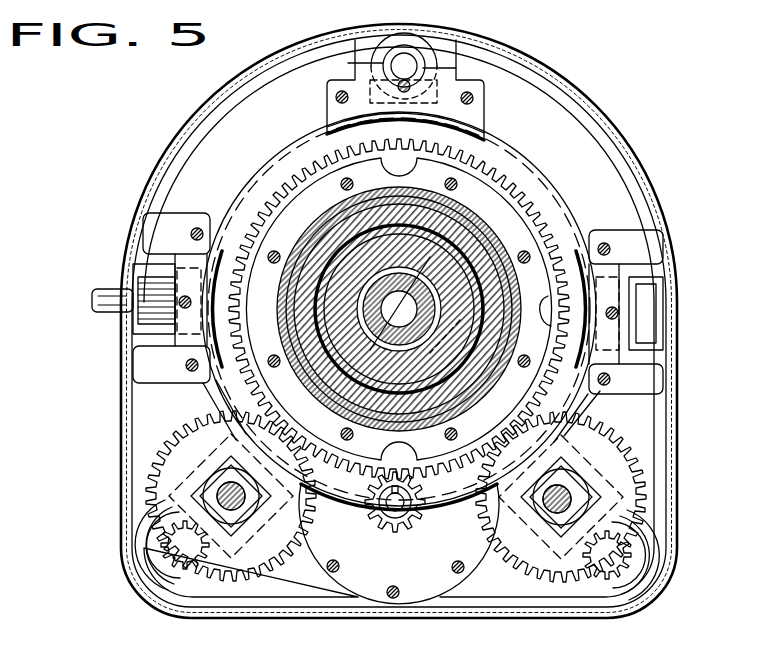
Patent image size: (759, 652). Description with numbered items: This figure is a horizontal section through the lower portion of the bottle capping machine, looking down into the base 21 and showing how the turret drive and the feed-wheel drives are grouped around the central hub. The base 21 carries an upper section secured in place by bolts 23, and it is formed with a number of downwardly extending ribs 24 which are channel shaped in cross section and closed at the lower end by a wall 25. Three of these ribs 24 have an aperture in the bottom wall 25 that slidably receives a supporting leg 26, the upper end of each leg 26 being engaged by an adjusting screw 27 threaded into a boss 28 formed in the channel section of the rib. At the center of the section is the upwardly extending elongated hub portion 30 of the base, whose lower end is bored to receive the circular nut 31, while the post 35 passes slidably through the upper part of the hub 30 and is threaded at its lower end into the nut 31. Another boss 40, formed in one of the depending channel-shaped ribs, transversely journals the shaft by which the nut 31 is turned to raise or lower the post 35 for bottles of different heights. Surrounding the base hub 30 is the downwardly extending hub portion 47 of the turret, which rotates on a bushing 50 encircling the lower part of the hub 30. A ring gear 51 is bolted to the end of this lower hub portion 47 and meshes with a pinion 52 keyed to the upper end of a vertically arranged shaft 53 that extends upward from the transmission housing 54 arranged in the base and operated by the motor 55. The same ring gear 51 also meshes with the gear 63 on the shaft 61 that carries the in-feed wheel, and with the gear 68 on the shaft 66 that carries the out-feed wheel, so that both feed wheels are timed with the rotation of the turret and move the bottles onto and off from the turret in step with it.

The base 21 is at (538, 172).
The bolts 23 is at (337, 100).
The ribs 24 is at (440, 68).
The wall 25 is at (478, 630).
The supporting legs 26 is at (406, 46).
The adjusting screws 27 is at (410, 66).
The bosses 28 is at (651, 593).
The hub portion 30 is at (519, 286).
The circular nut 31 is at (328, 380).
The post 35 is at (342, 366).
The boss 40 is at (160, 298).
The downwardly extending hub portion 47 is at (470, 225).
The bushing 50 is at (496, 254).
The ring gear 51 is at (531, 200).
The pinion 52 is at (417, 518).
The shaft 53 is at (386, 513).
The transmission housing 54 is at (399, 544).
The motor 55 is at (354, 182).
The shaft 61 is at (552, 505).
The gear 63 is at (622, 456).
The shaft 66 is at (256, 492).
The gear 68 is at (195, 432).